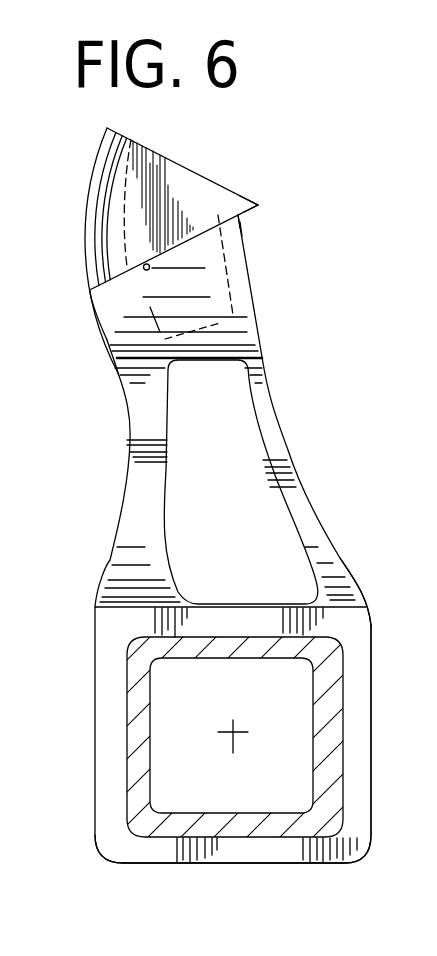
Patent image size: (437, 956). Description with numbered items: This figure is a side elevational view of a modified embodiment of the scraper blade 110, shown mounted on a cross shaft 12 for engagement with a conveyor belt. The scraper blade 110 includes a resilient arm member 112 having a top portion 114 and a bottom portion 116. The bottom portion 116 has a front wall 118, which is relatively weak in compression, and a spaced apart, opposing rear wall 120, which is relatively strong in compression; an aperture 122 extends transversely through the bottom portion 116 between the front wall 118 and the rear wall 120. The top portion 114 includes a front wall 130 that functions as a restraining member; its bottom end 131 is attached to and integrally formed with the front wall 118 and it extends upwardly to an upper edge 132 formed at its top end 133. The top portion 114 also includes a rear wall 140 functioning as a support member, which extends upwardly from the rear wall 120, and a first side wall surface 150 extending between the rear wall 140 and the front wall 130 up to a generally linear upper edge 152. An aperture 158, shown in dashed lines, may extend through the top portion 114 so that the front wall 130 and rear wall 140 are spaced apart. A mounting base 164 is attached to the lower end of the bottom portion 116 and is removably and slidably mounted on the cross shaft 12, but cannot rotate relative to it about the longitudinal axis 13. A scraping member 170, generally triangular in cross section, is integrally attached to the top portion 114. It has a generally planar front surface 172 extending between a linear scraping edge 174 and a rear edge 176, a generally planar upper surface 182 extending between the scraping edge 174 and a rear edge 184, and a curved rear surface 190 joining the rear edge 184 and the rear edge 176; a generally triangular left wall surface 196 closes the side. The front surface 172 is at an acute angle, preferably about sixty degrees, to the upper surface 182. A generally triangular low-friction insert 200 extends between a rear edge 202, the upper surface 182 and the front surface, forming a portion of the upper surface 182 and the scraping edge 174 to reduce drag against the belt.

The cross shaft 12 is at (140, 705).
The longitudinal axis 13 is at (235, 735).
The scraper blade 110 is at (318, 316).
The resilient arm member 112 is at (296, 450).
The top portion 114 is at (253, 316).
The bottom portion 116 is at (337, 567).
The front wall 118 is at (293, 513).
The rear wall 120 is at (138, 505).
The aperture 122 is at (195, 458).
The front wall 130 is at (250, 277).
The bottom end 131 is at (262, 360).
The upper edge 132 is at (240, 217).
The top end 133 is at (241, 221).
The rear wall 140 is at (109, 344).
The first side wall surface 150 is at (172, 308).
The upper edge 152 is at (142, 268).
The aperture 158 is at (134, 300).
The mounting base 164 is at (380, 742).
The scraping member 170 is at (78, 222).
The front surface 172 is at (256, 209).
The scraping edge 174 is at (258, 205).
The rear edge 176 is at (93, 291).
The upper surface 182 is at (178, 163).
The rear edge 184 is at (107, 128).
The rear surface 190 is at (88, 172).
The left wall surface 196 is at (200, 198).
The insert 200 is at (118, 242).
The rear edge 202 is at (122, 196).